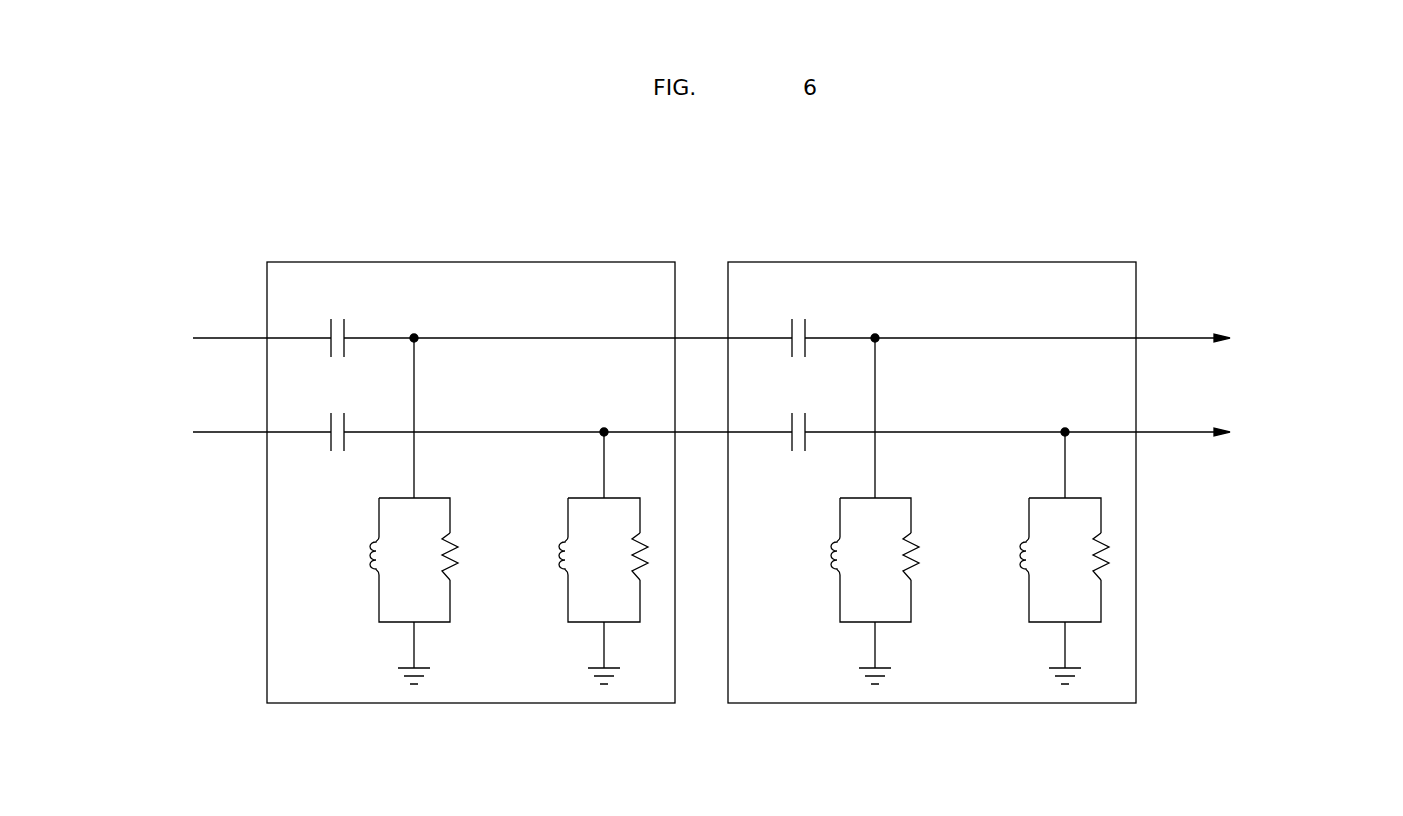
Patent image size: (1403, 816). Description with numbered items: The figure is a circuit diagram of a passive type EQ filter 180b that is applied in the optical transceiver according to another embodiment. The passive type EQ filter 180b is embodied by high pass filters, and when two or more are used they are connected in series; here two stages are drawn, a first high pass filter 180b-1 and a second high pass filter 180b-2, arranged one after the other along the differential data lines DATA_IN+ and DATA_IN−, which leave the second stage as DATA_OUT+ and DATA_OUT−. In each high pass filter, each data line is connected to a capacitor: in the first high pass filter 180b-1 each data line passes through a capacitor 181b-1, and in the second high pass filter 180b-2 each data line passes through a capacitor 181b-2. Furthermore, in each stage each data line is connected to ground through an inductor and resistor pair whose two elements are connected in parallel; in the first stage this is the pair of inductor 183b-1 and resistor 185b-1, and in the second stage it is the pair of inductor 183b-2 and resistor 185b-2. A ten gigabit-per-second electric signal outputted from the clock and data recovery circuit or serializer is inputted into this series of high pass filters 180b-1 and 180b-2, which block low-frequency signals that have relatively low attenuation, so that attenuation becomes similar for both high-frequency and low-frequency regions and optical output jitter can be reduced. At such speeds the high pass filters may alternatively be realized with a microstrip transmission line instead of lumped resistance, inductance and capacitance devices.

The passive type EQ filter 180b is at (1206, 192).
The high pass filter 180b-1 is at (414, 260).
The high pass filter 180b-2 is at (932, 464).
The capacitor 181b-1 is at (355, 326).
The capacitor 181b-2 is at (853, 322).
The inductor 183b-1 is at (370, 547).
The inductor 183b-2 is at (790, 543).
The resistor 185b-1 is at (487, 527).
The resistor 185b-2 is at (935, 541).